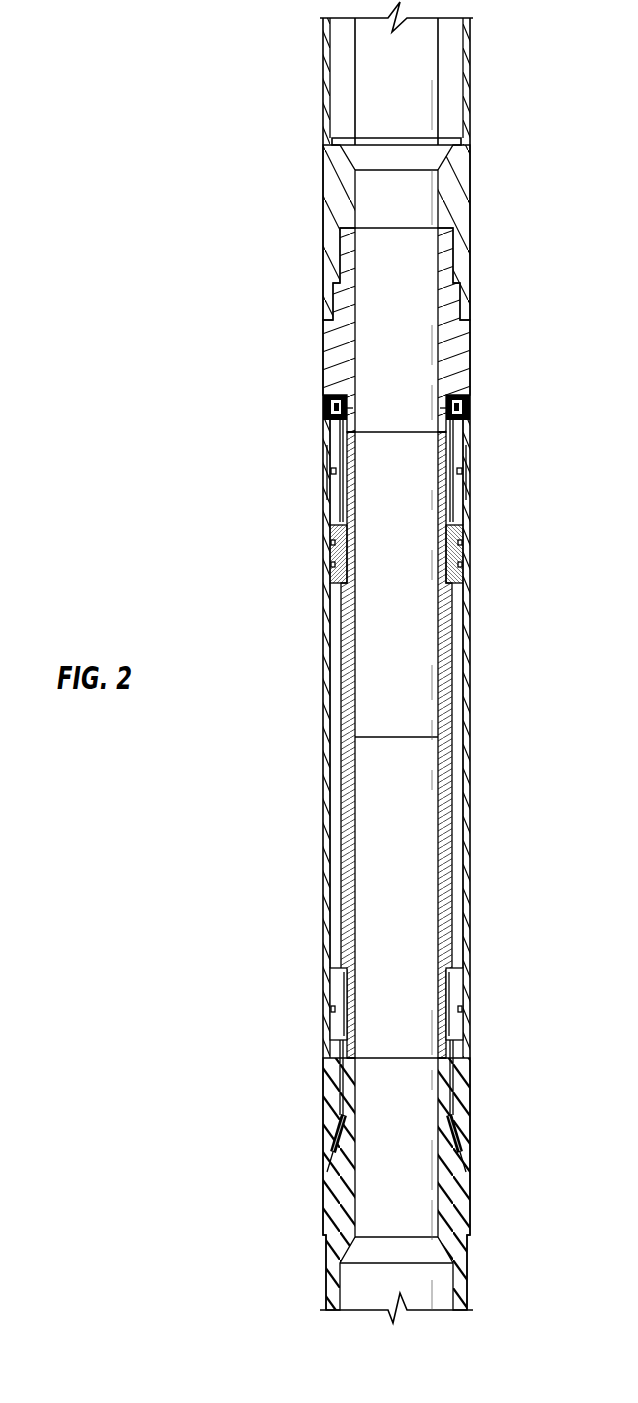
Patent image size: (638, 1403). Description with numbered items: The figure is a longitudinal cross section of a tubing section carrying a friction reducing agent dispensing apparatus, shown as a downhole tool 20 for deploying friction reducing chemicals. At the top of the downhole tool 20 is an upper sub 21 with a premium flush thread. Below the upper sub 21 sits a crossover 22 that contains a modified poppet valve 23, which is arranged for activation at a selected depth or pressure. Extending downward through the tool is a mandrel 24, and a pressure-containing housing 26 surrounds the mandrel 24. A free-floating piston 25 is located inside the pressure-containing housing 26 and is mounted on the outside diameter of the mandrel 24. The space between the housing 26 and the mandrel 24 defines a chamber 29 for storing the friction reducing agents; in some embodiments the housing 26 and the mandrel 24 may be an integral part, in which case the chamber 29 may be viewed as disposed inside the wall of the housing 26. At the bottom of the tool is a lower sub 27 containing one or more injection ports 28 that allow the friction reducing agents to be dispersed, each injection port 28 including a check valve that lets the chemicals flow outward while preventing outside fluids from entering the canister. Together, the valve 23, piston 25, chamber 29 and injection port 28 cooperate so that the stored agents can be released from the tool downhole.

The downhole tool 20 is at (190, 75).
The upper sub 21 is at (458, 188).
The crossover 22 is at (458, 334).
The modified poppet valve 23 is at (468, 408).
The mandrel 24 is at (445, 700).
The free-floating piston 25 is at (461, 541).
The pressure-containing housing 26 is at (468, 907).
The lower sub 27 is at (462, 1068).
The injection port 28 is at (468, 1148).
The chamber 29 is at (455, 820).